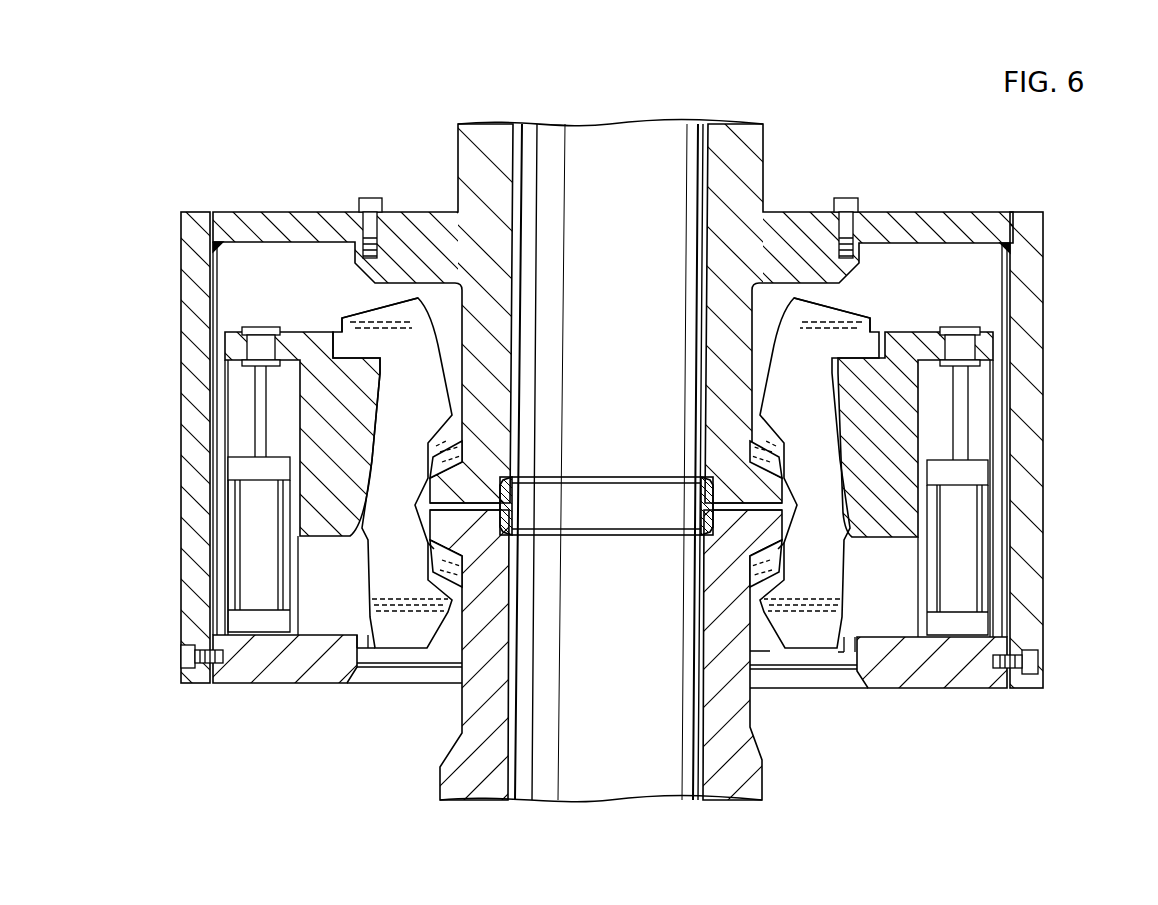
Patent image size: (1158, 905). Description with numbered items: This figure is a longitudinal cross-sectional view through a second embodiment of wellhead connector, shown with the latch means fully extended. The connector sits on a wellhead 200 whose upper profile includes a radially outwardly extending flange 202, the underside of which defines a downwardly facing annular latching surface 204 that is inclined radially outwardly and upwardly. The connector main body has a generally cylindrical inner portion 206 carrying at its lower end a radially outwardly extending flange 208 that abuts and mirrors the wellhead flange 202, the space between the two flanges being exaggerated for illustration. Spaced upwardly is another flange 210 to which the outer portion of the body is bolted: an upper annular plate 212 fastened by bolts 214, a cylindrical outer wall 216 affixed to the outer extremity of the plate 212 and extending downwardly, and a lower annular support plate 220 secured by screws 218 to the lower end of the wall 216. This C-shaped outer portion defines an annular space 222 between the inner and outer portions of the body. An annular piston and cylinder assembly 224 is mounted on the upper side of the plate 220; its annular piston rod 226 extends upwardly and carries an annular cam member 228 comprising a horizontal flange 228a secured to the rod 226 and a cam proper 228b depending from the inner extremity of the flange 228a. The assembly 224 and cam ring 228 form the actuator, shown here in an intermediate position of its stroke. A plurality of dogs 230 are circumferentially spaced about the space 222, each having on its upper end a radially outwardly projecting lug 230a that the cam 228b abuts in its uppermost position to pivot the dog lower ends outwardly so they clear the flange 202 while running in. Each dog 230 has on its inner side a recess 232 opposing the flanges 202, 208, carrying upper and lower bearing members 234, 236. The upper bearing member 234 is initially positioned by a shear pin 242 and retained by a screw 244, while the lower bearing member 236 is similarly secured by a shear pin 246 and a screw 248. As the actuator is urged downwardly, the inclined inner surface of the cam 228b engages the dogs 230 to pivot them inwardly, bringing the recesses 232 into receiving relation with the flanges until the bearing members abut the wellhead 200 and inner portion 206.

The wellhead 200 is at (706, 708).
The flange 202 is at (450, 522).
The annular latching surface 204 is at (458, 562).
The inner portion 206 is at (510, 303).
The flange 208 is at (503, 477).
The flange 210 is at (417, 220).
The upper annular plate 212 is at (940, 222).
The bolts 214 is at (367, 227).
The cylindrical outer wall 216 is at (190, 280).
The screws 218 is at (183, 657).
The lower annular support plate 220 is at (257, 675).
The annular space 222 is at (213, 256).
The piston and cylinder assembly 224 is at (973, 560).
The annular piston rod 226 is at (970, 397).
The annular cam member 228 is at (913, 330).
The flange 228a is at (987, 350).
The cam proper 228b is at (927, 515).
The dogs 230 is at (372, 598).
The lugs 230a is at (355, 320).
The recess 232 is at (410, 505).
The bearing member 234 is at (445, 452).
The bearing member 236 is at (432, 580).
The shear pin 242 is at (458, 440).
The screw 244 is at (433, 450).
The shear pin 246 is at (445, 585).
The screw 248 is at (426, 546).